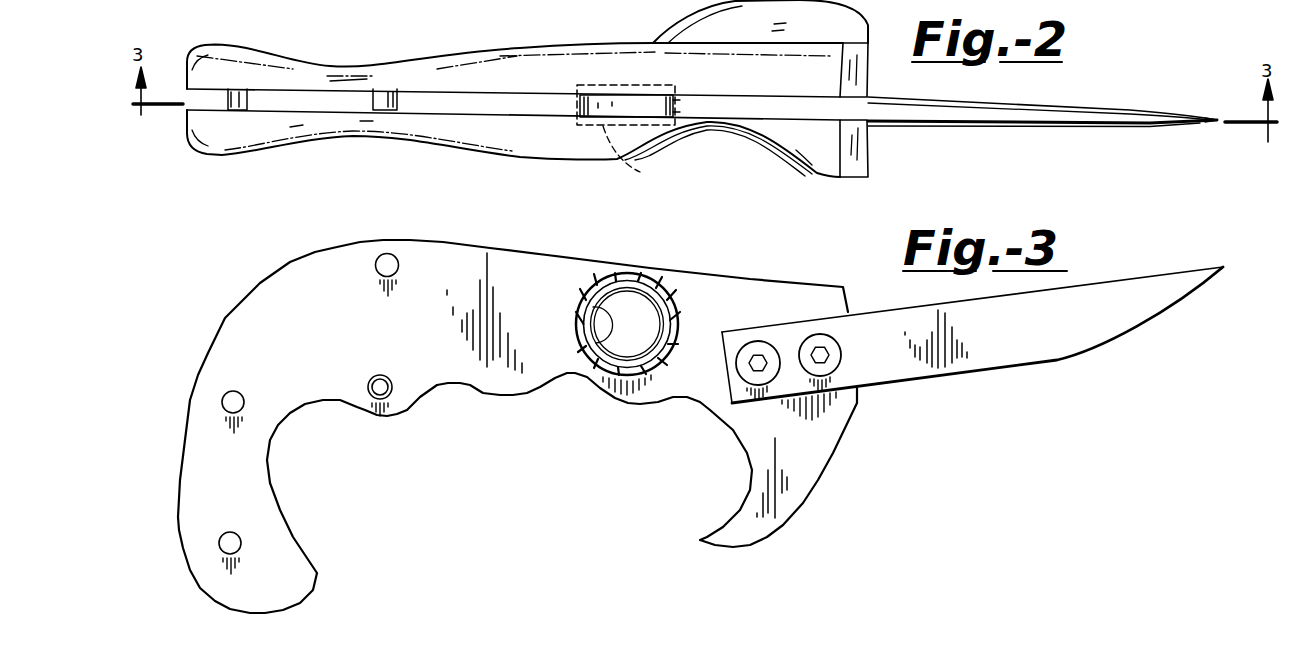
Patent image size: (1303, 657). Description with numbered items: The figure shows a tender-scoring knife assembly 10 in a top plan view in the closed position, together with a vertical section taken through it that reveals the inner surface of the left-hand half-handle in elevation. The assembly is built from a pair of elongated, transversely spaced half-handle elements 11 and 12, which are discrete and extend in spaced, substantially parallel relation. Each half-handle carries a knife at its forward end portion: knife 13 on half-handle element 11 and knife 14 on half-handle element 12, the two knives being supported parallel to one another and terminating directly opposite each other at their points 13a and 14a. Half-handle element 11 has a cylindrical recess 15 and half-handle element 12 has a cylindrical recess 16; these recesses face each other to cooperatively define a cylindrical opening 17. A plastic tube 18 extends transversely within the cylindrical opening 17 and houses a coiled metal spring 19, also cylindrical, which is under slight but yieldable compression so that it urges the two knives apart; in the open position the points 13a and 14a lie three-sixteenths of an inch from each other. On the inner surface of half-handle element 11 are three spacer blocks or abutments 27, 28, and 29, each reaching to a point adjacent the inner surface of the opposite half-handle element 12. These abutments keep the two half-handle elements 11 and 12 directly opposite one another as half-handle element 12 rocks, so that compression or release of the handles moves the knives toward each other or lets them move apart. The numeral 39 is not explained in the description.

In FIG. 2, the tender-scoring knife assembly 10 is at (1097, 80).
In FIG. 2, the half-handle element 11 is at (430, 55).
In FIG. 3, the half-handle element 11 is at (314, 331).
In FIG. 2, the half-handle element 12 is at (437, 148).
In FIG. 2, the knife 13 is at (1007, 103).
In FIG. 3, the knife 13 is at (1050, 344).
In FIG. 2, the point 13a is at (1216, 114).
In FIG. 3, the point 13a is at (1223, 265).
In FIG. 2, the knife 14 is at (1037, 128).
In FIG. 2, the point 14a is at (1214, 125).
In FIG. 2, the cylindrical recess 15 is at (600, 84).
In FIG. 2, the cylindrical recess 16 is at (634, 157).
In FIG. 2, the cylindrical opening 17 is at (638, 105).
In FIG. 2, the plastic tube 18 is at (677, 107).
In FIG. 3, the plastic tube 18 is at (657, 287).
In FIG. 3, the coiled metal spring 19 is at (578, 345).
In FIG. 3, the spacer block 27 is at (218, 556).
In FIG. 2, the spacer block 28 is at (248, 98).
In FIG. 3, the spacer block 28 is at (222, 408).
In FIG. 2, the spacer block 29 is at (373, 103).
In FIG. 3, the spacer block 29 is at (393, 256).
In FIG. 2, the bolster hump 39 is at (760, 21).